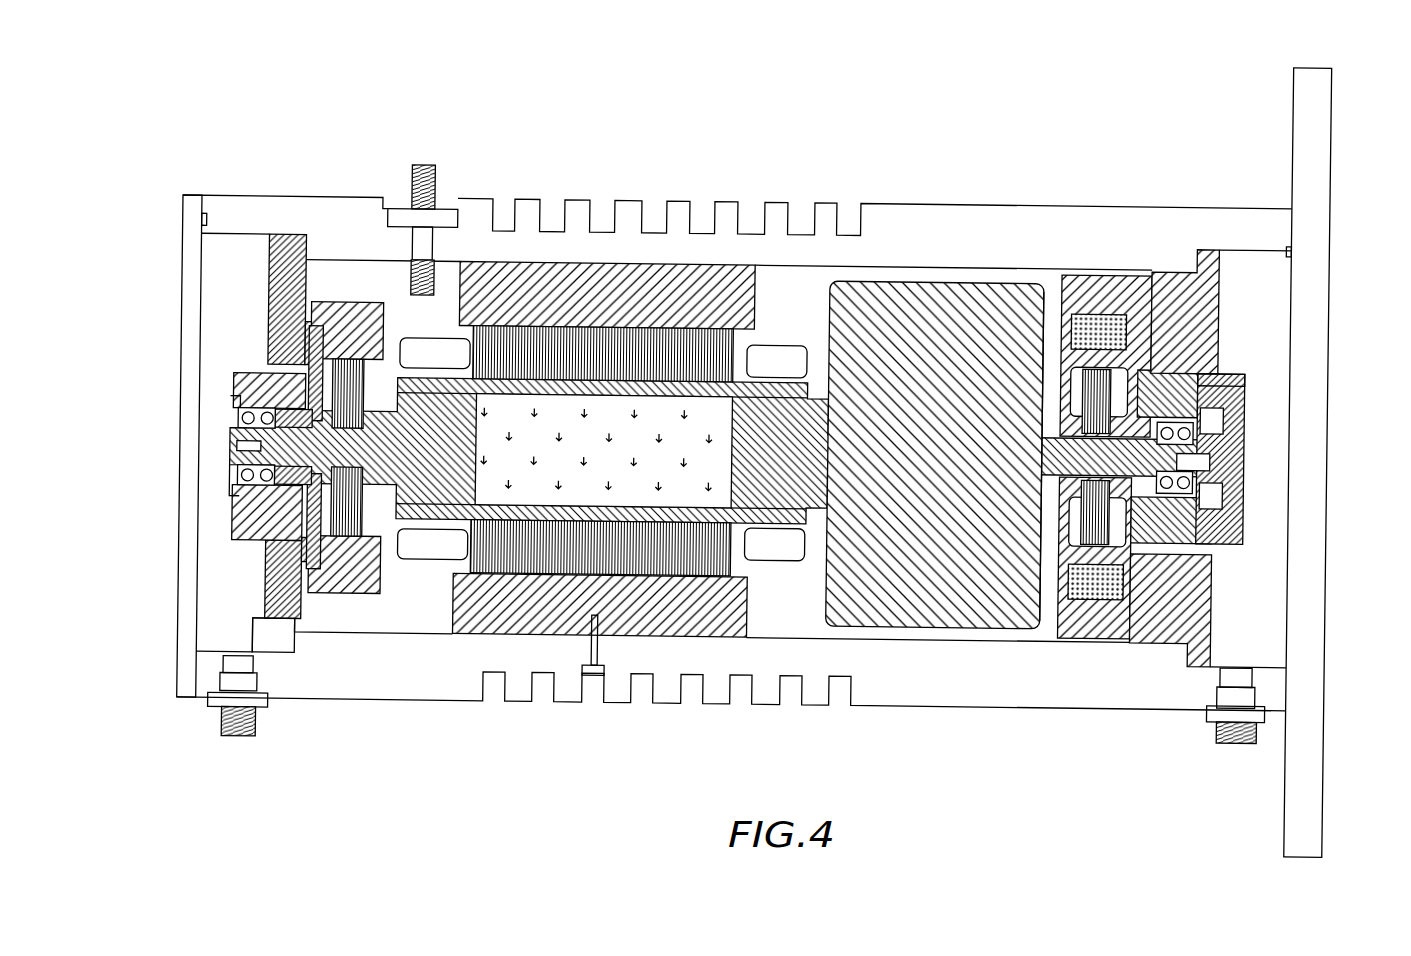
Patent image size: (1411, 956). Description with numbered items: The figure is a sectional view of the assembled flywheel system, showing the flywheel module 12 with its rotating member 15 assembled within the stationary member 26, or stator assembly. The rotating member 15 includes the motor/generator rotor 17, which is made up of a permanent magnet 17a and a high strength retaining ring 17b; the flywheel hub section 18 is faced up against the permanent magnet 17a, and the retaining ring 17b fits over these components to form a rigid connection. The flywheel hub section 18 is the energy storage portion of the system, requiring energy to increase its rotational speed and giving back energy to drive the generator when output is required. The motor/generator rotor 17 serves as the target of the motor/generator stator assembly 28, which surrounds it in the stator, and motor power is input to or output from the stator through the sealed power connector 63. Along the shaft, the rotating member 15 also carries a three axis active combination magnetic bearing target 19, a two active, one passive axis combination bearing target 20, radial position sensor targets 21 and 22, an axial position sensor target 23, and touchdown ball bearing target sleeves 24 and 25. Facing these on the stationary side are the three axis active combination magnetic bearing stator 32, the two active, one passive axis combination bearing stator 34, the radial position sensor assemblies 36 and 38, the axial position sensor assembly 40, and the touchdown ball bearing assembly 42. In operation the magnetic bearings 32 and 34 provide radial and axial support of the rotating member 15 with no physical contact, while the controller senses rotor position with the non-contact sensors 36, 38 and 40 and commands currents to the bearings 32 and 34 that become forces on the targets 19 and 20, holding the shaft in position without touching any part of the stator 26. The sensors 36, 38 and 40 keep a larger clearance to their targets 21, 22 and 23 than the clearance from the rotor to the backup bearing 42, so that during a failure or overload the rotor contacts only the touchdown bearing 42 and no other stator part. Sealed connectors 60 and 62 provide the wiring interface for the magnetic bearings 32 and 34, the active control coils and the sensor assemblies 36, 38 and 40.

The flywheel module 12 is at (990, 680).
The rotating member 15 is at (1017, 340).
The motor/generator rotor 17 is at (711, 412).
The permanent magnet 17a is at (533, 485).
The retaining ring 17b is at (658, 385).
The flywheel hub section 18 is at (947, 320).
The three axis active combination magnetic bearing target 19 is at (1100, 340).
The two active, one passive axis combination bearing target 20 is at (318, 300).
The radial position sensor target 21 is at (1205, 385).
The radial position sensor target 22 is at (265, 372).
The axial position sensor target 23 is at (1237, 533).
The touchdown ball bearing target sleeve 24 is at (245, 385).
The touchdown ball bearing target sleeve 25 is at (236, 447).
The stationary member 26 is at (633, 655).
The motor/generator stator assembly 28 is at (540, 300).
The three axis active combination magnetic bearing stator 32 is at (1082, 320).
The two active, one passive axis combination bearing stator 34 is at (355, 300).
The radial position sensor assembly 36 is at (285, 400).
The radial position sensor assembly 38 is at (1150, 330).
The axial position sensor assembly 40 is at (1240, 458).
The touchdown ball bearing assembly 42 is at (1243, 370).
The sealed connector 60 is at (240, 737).
The sealed connector 62 is at (1240, 743).
The sealed power connector 63 is at (430, 160).